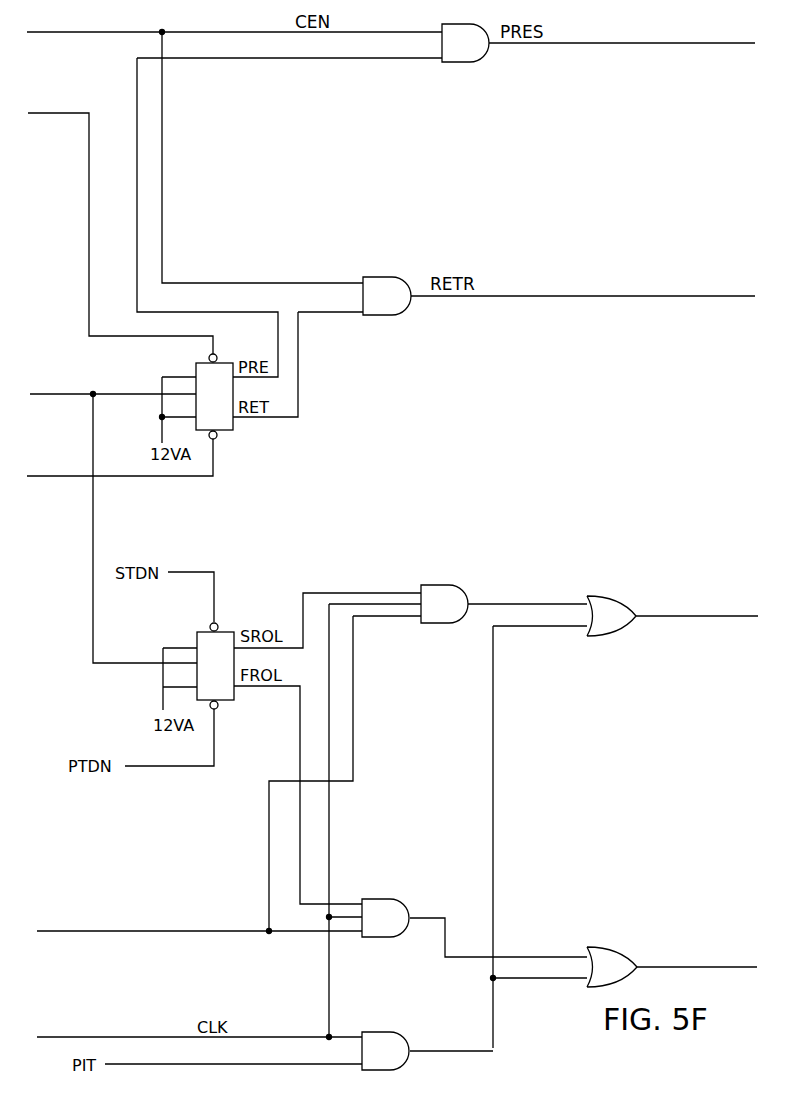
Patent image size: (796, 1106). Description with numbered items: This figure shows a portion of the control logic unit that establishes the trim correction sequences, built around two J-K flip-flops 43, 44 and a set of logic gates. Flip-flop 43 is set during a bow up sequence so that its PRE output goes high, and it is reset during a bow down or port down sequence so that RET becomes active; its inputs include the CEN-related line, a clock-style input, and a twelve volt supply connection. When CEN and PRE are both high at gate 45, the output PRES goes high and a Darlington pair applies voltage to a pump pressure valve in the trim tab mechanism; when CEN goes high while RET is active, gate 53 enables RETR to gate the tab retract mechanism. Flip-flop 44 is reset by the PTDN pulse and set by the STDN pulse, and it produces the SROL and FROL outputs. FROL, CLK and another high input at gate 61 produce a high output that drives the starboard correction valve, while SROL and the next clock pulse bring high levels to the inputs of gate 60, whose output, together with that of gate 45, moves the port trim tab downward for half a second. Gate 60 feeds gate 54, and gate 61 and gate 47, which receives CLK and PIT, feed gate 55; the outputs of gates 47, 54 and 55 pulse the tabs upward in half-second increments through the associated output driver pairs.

The J-K flip-flop 43 is at (214, 396).
The J-K flip-flop 44 is at (215, 666).
The gate 45 is at (465, 43).
The gate 47 is at (385, 1051).
The gate 53 is at (387, 296).
The gate 54 is at (611, 616).
The gate 55 is at (612, 967).
The gate 60 is at (444, 604).
The gate 61 is at (385, 918).